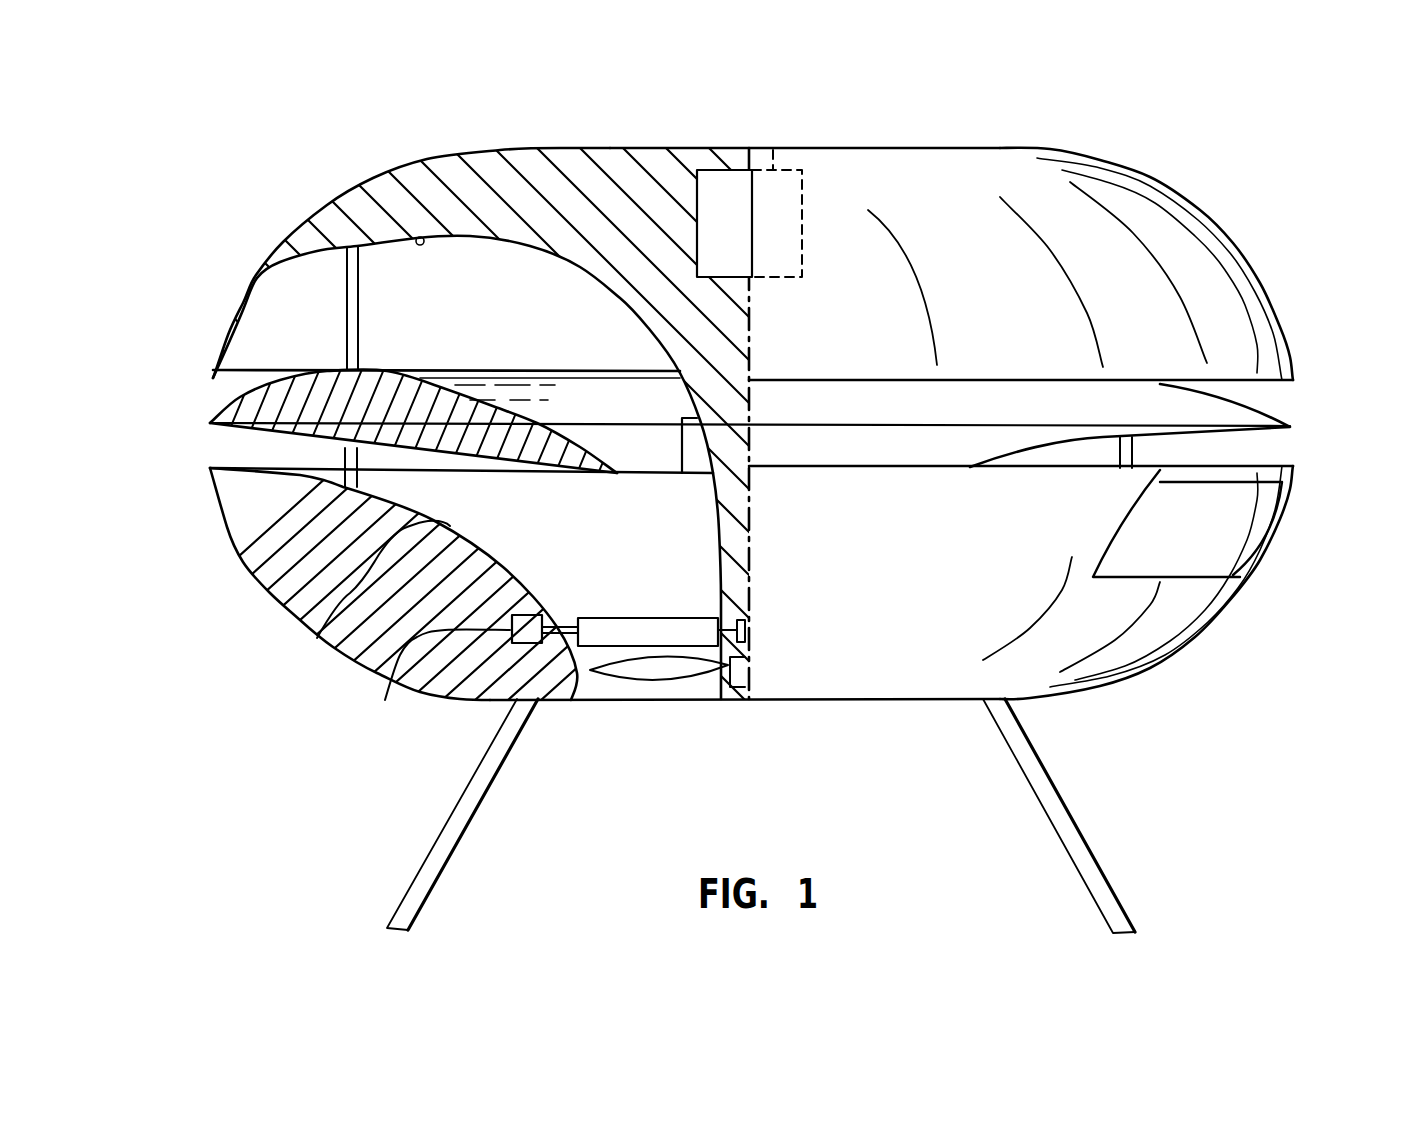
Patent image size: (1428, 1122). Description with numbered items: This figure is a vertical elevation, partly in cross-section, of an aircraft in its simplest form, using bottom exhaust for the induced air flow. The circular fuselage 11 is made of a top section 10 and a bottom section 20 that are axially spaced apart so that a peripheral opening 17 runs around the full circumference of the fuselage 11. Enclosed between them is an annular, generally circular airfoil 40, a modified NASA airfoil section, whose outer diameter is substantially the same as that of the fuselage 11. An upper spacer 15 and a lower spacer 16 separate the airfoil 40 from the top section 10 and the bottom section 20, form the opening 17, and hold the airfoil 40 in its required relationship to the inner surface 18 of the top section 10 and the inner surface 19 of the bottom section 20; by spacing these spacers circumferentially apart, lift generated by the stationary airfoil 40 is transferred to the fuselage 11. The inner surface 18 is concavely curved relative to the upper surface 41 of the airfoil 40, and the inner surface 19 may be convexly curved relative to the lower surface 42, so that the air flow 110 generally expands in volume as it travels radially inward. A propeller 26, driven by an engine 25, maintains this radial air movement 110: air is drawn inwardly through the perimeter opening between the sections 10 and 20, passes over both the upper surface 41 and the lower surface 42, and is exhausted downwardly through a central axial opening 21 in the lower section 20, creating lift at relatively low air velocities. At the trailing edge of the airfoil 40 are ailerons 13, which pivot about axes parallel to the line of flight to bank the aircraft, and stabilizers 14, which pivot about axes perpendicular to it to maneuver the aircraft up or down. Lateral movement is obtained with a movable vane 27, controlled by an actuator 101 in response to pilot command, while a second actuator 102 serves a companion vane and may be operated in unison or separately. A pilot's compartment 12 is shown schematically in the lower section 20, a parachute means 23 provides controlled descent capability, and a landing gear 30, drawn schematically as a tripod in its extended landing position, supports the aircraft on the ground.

The top section 10 is at (309, 238).
The circular fuselage 11 is at (1233, 227).
The pilot's compartment 12 is at (1227, 527).
The ailerons 13 is at (692, 458).
The stabilizers 14 is at (577, 460).
The upper spacer 15 is at (347, 302).
The lower spacer 16 is at (340, 486).
The peripheral opening 17 is at (213, 424).
The inner surface of top section 18 is at (417, 237).
The inner surface of bottom section 19 is at (315, 636).
The bottom section 20 is at (243, 560).
The central axial opening 21 is at (706, 700).
The parachute means 23 is at (728, 168).
The engine 25 is at (778, 188).
The propeller 26 is at (642, 672).
The movable vane 27 is at (592, 635).
The landing gear 30 is at (486, 755).
The annular airfoil 40 is at (215, 407).
The upper surface 41 is at (472, 392).
The lower surface 42 is at (420, 452).
The actuator 101 is at (386, 698).
The actuator 102 is at (745, 637).
The air flow 110 is at (222, 389).